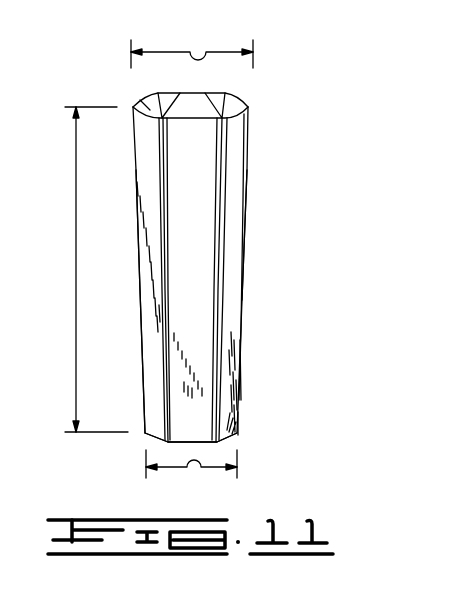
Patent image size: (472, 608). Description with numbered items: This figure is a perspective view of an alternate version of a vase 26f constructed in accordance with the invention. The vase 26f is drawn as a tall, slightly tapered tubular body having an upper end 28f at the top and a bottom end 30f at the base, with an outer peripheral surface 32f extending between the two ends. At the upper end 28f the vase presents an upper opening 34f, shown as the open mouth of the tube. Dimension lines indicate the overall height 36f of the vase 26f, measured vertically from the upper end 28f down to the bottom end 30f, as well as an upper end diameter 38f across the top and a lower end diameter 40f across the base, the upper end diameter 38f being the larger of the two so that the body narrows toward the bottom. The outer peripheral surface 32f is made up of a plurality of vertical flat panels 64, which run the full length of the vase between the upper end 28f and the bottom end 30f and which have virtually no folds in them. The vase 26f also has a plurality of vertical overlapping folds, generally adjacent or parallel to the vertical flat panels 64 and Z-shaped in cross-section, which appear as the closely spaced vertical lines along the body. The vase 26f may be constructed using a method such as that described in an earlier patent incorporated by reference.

The vase 26f is at (287, 75).
The upper end 28f is at (243, 108).
The bottom end 30f is at (227, 440).
The outer peripheral surface 32f is at (193, 242).
The upper opening 34f is at (145, 102).
The height 36f is at (76, 263).
The upper end diameter 38f is at (206, 52).
The lower end diameter 40f is at (201, 467).
The vertical flat panels 64 is at (238, 177).